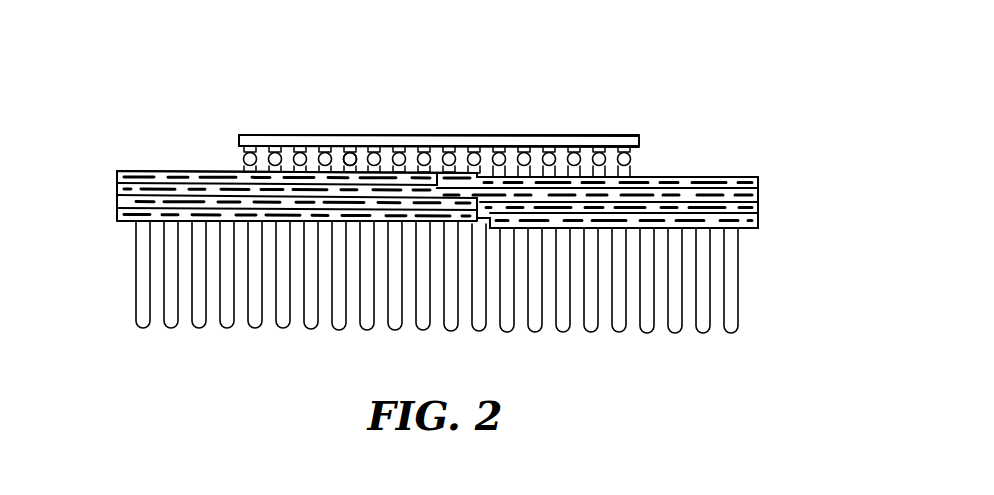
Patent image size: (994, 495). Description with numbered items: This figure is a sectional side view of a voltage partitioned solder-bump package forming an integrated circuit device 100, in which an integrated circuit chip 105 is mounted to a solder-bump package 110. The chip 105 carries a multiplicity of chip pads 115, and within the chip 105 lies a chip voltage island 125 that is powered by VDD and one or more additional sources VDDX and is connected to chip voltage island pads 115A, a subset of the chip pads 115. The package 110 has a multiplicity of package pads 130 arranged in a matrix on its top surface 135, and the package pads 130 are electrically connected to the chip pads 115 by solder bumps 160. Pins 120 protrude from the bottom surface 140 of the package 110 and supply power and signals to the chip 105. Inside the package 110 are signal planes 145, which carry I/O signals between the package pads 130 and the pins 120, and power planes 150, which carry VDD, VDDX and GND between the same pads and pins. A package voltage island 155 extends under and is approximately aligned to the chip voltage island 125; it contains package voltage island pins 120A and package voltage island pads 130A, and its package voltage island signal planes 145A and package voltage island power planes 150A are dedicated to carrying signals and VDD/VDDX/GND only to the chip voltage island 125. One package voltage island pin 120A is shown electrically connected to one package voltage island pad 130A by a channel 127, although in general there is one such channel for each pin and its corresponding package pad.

The integrated circuit device 100 is at (772, 46).
The integrated circuit chip 105 is at (352, 166).
The solder-bump package 110 is at (402, 163).
The chip pads 115 is at (376, 148).
The chip voltage island pads 115A is at (446, 167).
The pins 120 is at (170, 251).
The package voltage island pins 120A is at (510, 330).
The chip voltage island 125 is at (528, 142).
The channel 127 is at (484, 222).
The package pads 130 is at (340, 142).
The package voltage island pads 130A is at (468, 150).
The top surface 135 is at (213, 172).
The bottom surface 140 is at (754, 229).
The signal planes 145 is at (643, 157).
The package voltage island signal planes 145A is at (480, 176).
The power planes 150 is at (138, 178).
The package voltage island power planes 150A is at (530, 203).
The package voltage island 155 is at (524, 193).
The solder bumps 160 is at (277, 157).